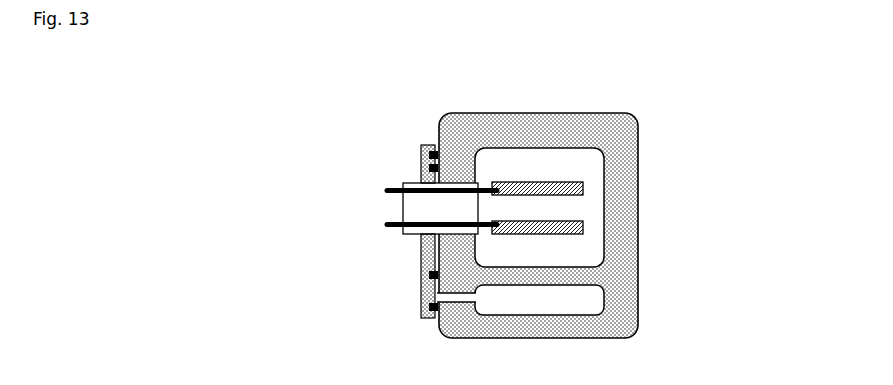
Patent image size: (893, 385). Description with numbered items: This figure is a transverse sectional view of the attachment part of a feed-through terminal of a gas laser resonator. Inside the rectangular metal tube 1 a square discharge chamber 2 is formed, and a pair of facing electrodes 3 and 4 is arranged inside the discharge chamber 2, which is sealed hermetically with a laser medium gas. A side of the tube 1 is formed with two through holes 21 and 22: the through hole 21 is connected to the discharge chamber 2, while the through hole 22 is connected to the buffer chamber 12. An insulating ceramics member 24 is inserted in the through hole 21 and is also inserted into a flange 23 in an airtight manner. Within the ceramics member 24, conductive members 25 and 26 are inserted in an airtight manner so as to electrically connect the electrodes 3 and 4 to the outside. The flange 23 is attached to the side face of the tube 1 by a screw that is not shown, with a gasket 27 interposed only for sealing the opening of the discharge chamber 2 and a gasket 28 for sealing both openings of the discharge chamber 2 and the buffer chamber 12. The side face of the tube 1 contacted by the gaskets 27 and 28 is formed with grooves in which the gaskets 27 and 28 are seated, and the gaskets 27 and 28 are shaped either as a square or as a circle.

The tube 1 is at (630, 113).
The discharge chamber 2 is at (583, 171).
The electrode 3 is at (583, 192).
The electrode 4 is at (583, 228).
The buffer chamber 12 is at (580, 304).
The through hole 21 is at (455, 180).
The through hole 22 is at (457, 298).
The flange 23 is at (425, 290).
The insulating ceramics member 24 is at (458, 207).
The conductive member 25 is at (385, 192).
The conductive member 26 is at (385, 226).
The gasket 27 is at (428, 167).
The gasket 28 is at (422, 147).